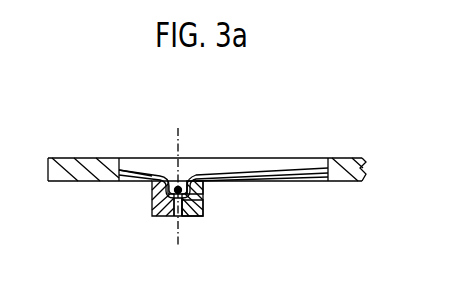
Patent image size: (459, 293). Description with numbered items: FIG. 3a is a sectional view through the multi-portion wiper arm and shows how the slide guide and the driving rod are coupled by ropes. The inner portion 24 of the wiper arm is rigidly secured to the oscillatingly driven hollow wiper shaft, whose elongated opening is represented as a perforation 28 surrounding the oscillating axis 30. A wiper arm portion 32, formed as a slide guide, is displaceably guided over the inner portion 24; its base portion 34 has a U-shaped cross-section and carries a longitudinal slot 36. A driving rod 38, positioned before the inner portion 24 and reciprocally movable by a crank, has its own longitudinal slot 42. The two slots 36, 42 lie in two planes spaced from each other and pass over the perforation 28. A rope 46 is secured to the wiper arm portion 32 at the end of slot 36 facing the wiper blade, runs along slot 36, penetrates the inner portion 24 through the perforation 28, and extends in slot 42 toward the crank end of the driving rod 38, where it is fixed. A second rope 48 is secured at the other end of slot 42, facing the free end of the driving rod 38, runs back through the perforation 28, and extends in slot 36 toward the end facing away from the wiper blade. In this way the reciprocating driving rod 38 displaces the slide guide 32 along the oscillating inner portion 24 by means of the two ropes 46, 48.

The inner portion of the wiper arm 24 is at (204, 188).
The perforation 28 is at (182, 218).
The oscillating axis 30 is at (180, 138).
The wiper arm portion 32 is at (152, 216).
The base portion 34 is at (206, 217).
The longitudinal slot 36 is at (174, 218).
The driving rod 38 is at (304, 159).
The longitudinal slot 42 is at (257, 168).
The rope 46 is at (305, 178).
The second rope 48 is at (141, 170).